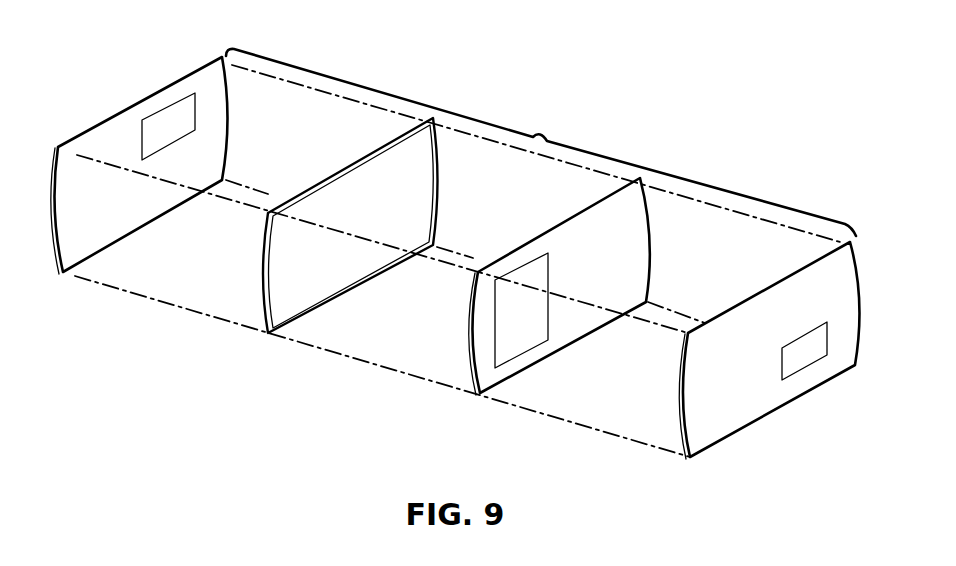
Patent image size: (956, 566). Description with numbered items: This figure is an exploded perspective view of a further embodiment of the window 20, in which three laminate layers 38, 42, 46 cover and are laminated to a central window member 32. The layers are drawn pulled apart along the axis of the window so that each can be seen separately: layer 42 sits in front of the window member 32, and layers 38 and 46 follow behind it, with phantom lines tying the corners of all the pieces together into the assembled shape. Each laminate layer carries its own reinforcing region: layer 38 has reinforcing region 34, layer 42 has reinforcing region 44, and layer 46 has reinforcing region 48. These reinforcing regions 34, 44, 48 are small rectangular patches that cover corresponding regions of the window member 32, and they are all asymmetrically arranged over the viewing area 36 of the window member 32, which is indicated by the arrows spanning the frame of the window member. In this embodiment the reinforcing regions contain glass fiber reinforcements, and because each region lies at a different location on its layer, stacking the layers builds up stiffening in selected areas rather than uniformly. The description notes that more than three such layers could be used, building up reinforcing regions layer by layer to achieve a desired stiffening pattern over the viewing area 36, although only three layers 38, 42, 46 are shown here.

The window 20 is at (541, 133).
The window member 32 is at (288, 244).
The reinforcing region 34 is at (521, 328).
The viewing area 36 is at (285, 318).
The layer 38 is at (587, 314).
The layer 42 is at (100, 147).
The reinforcing region 44 is at (168, 127).
The layer 46 is at (720, 400).
The reinforcing region 48 is at (800, 353).